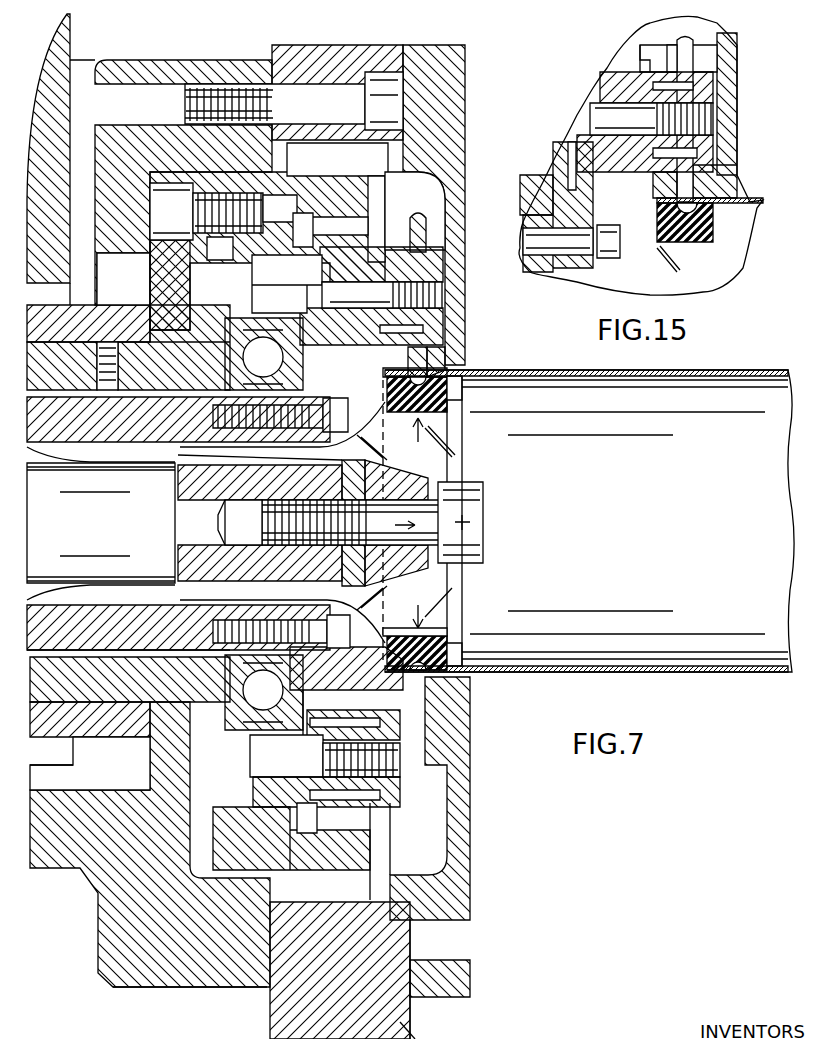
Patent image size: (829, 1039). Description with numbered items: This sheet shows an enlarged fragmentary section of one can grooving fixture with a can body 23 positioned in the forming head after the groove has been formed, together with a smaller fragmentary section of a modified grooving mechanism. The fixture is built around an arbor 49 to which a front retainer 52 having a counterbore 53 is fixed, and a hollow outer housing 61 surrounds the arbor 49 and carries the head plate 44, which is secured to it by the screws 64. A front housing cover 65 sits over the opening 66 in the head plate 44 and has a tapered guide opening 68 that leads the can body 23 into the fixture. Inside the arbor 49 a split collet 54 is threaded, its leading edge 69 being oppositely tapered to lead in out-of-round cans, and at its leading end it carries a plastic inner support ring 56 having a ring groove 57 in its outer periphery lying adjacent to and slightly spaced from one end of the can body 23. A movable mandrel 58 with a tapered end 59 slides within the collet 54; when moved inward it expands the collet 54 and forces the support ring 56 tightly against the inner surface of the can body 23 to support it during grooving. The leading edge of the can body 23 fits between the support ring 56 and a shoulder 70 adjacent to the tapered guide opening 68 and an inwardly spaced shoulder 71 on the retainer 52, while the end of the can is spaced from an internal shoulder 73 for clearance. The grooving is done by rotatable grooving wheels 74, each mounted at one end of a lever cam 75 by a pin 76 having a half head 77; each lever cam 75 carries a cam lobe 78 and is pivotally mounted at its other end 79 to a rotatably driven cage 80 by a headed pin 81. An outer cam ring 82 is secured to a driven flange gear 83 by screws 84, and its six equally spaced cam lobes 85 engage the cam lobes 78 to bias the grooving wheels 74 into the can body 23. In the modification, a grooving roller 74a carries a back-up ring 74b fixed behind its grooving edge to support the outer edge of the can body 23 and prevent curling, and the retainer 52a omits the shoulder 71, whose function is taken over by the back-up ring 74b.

In FIG. 7, the can body 23 is at (589, 521).
In FIG. 15, the can body 23 is at (750, 202).
In FIG. 7, the head plate 44 is at (410, 1034).
In FIG. 7, the arbor 49 is at (119, 614).
In FIG. 7, the front retainer 52 is at (346, 693).
In FIG. 15, the modified retainer 52a is at (590, 200).
In FIG. 7, the counterbore 53 is at (401, 630).
In FIG. 7, the split collet 54 is at (456, 452).
In FIG. 15, the split collet 54 is at (690, 272).
In FIG. 7, the plastic inner support ring 56 is at (447, 640).
In FIG. 15, the plastic inner support ring 56 is at (713, 230).
In FIG. 7, the ring groove 57 is at (413, 672).
In FIG. 7, the movable mandrel 58 is at (100, 532).
In FIG. 7, the tapered end 59 is at (450, 580).
In FIG. 7, the hollow outer housing 61 is at (178, 987).
In FIG. 7, the screws 64 is at (235, 90).
In FIG. 7, the front housing cover 65 is at (465, 122).
In FIG. 15, the front housing cover 65 is at (737, 132).
In FIG. 7, the opening 66 is at (368, 900).
In FIG. 7, the tapered guide opening 68 is at (447, 364).
In FIG. 7, the leading edge 69 is at (464, 380).
In FIG. 7, the shoulder 70 is at (430, 354).
In FIG. 7, the inwardly spaced shoulder 71 is at (393, 409).
In FIG. 7, the internal shoulder 73 is at (388, 378).
In FIG. 7, the rotatable grooving wheel 74 is at (426, 230).
In FIG. 15, the modified grooving roller 74a is at (717, 58).
In FIG. 15, the back-up ring 74b is at (667, 50).
In FIG. 7, the lever cam 75 is at (379, 258).
In FIG. 15, the lever cam 75 is at (600, 90).
In FIG. 7, the pin 76 is at (382, 295).
In FIG. 15, the pin 76 is at (651, 119).
In FIG. 7, the half head 77 is at (287, 284).
In FIG. 7, the cam lobe 78 is at (368, 242).
In FIG. 7, the pivot end 79 is at (400, 768).
In FIG. 7, the rotatably driven cage 80 is at (118, 707).
In FIG. 7, the headed pin 81 is at (312, 716).
In FIG. 7, the outer cam ring 82 is at (323, 180).
In FIG. 7, the driven flange gear 83 is at (109, 322).
In FIG. 7, the screws 84 is at (206, 211).
In FIG. 7, the cam lobes 85 is at (318, 227).